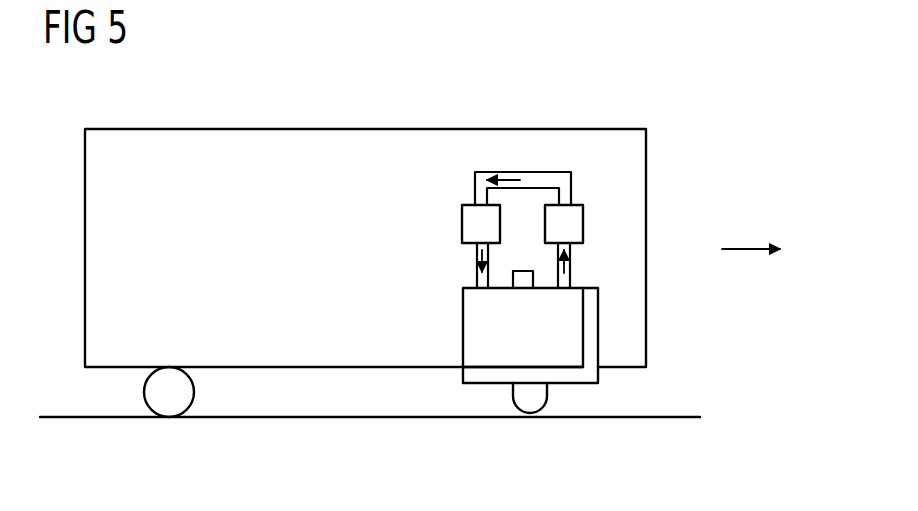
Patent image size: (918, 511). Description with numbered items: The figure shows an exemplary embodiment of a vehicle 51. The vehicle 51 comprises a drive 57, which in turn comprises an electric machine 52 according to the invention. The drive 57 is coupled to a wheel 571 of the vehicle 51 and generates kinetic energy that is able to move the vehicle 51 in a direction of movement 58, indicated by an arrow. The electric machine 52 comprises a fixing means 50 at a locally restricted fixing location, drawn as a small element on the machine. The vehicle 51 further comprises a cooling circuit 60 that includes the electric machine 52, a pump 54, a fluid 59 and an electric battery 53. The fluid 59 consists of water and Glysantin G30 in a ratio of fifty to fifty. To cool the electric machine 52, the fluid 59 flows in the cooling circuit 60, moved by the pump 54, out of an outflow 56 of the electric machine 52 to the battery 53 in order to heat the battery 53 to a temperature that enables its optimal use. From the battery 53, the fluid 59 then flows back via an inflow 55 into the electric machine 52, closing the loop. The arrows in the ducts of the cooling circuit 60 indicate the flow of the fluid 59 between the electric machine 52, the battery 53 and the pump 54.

The fixing means 50 is at (523, 270).
The vehicle 51 is at (672, 96).
The electric machine 52 is at (477, 322).
The electric battery 53 is at (462, 223).
The pump 54 is at (585, 225).
The inflow 55 is at (480, 283).
The outflow 56 is at (572, 283).
The drive 57 is at (577, 376).
The wheel 571 is at (529, 407).
The direction of movement 58 is at (745, 249).
The fluid 59 is at (505, 177).
The cooling circuit 60 is at (547, 177).